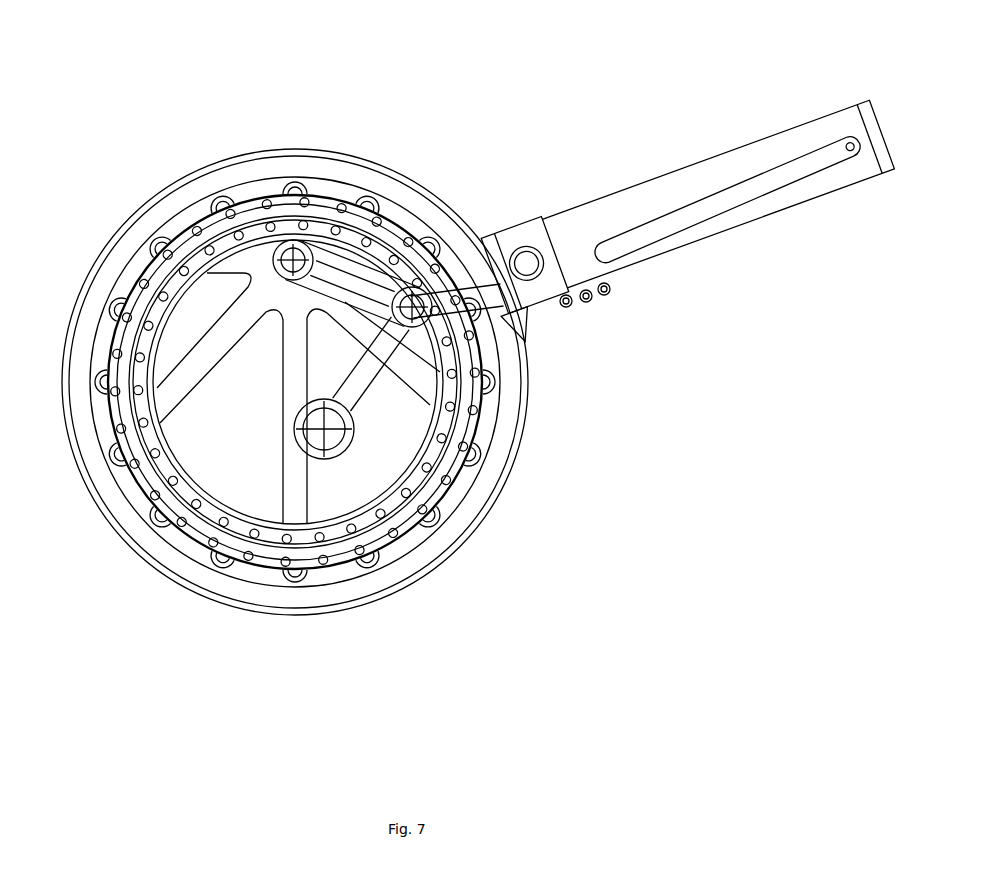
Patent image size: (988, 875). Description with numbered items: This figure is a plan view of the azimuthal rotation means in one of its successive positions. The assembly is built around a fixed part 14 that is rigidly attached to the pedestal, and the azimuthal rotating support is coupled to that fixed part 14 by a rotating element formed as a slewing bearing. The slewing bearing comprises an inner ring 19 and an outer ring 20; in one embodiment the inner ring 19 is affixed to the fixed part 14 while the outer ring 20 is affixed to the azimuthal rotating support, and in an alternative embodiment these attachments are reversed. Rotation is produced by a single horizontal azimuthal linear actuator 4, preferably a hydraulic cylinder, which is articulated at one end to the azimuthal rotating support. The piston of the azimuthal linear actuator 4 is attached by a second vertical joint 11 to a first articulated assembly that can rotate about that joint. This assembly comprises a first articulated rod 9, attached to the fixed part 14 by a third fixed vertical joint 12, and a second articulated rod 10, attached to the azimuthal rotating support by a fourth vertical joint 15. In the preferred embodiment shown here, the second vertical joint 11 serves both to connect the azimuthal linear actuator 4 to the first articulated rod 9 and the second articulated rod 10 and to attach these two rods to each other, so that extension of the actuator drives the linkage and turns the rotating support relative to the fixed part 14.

The azimuthal linear actuator 4 is at (657, 197).
The first articulated rod 9 is at (343, 280).
The second articulated rod 10 is at (353, 393).
The second vertical joint 11 is at (432, 314).
The third fixed vertical joint 12 is at (293, 240).
The fixed part 14 is at (453, 493).
The fourth vertical joint 15 is at (324, 429).
The inner ring 19 is at (302, 540).
The outer ring 20 is at (267, 557).